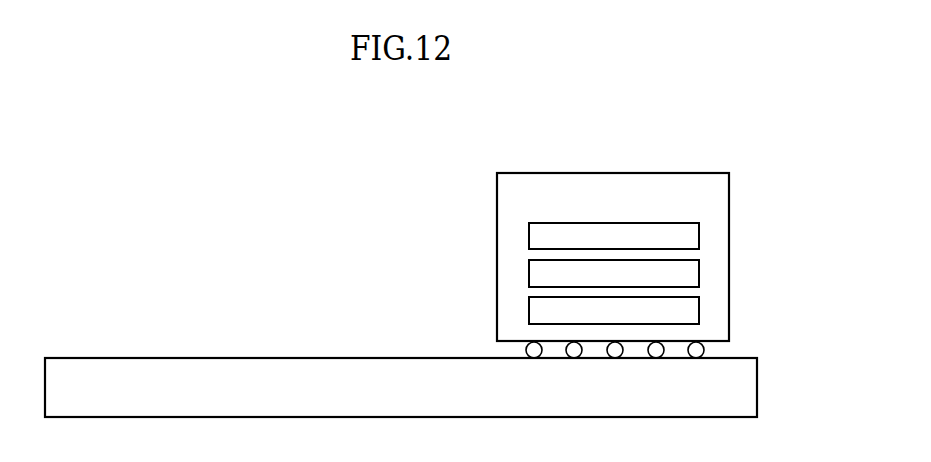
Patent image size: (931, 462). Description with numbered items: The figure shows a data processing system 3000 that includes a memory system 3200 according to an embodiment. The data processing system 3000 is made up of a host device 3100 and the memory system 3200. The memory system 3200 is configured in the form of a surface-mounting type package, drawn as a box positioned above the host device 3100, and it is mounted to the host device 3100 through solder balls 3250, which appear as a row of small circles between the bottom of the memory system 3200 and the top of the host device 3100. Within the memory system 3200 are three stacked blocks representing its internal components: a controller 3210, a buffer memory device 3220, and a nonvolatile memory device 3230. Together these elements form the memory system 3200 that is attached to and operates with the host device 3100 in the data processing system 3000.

The data processing system 3000 is at (33, 113).
The host device 3100 is at (401, 387).
The memory system 3200 is at (613, 257).
The controller 3210 is at (614, 237).
The buffer memory device 3220 is at (614, 274).
The nonvolatile memory device 3230 is at (614, 312).
The solder balls 3250 is at (714, 349).